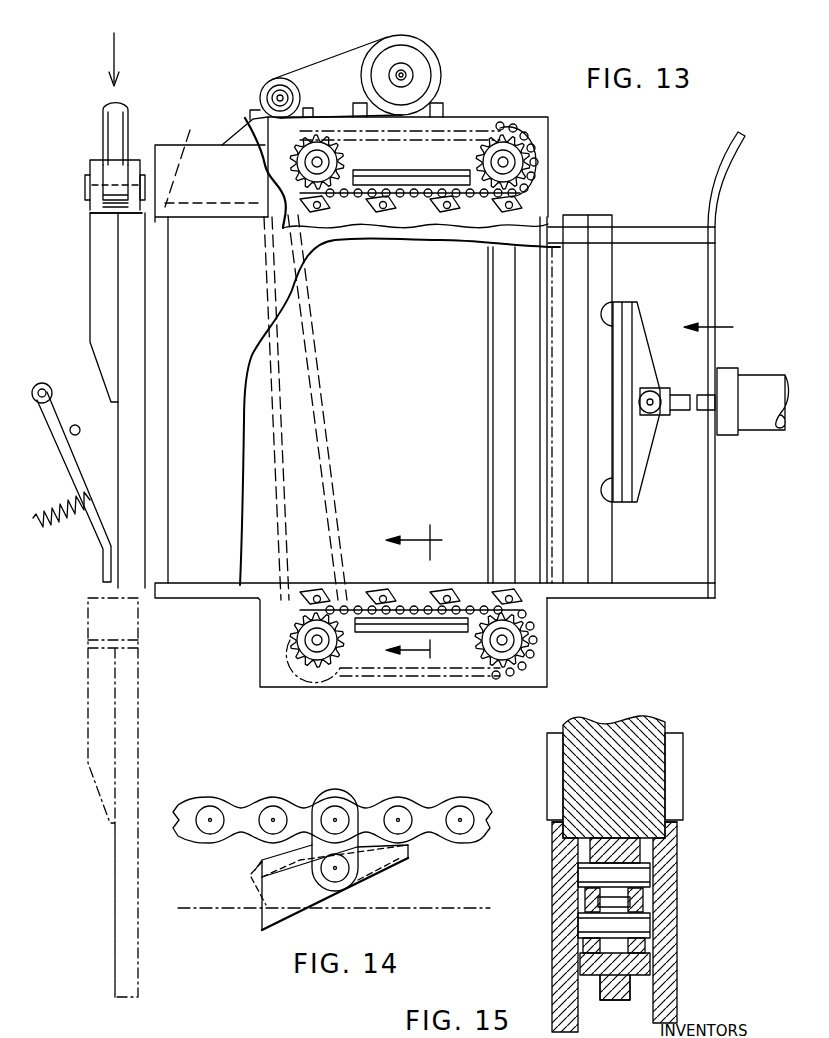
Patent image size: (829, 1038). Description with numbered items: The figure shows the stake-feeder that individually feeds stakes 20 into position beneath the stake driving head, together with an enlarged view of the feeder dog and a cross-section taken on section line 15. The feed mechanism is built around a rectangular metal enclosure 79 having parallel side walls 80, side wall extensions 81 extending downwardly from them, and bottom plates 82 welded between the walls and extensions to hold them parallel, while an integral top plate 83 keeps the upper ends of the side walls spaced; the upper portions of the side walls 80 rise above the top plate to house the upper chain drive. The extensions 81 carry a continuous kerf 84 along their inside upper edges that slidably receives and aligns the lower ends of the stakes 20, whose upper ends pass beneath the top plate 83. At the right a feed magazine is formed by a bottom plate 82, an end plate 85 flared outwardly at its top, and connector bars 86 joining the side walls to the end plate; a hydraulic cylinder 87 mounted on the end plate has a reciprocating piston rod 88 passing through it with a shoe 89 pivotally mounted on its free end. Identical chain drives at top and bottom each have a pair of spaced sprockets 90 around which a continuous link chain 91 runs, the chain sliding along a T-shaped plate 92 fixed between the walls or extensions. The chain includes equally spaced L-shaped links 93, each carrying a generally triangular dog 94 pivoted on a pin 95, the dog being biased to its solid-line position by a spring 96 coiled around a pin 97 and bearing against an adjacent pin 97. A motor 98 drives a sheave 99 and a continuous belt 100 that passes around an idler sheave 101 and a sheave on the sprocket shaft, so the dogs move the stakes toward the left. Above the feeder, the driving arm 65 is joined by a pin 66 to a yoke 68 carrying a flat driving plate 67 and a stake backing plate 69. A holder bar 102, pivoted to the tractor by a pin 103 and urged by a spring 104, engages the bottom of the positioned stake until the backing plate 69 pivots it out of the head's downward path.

In FIG. 13, the section line 15 is at (425, 593).
In FIG. 13, the stake 20 is at (592, 218).
In FIG. 15, the stake 20 is at (636, 722).
In FIG. 13, the driving arm 65 is at (118, 132).
In FIG. 13, the pin 66 is at (85, 185).
In FIG. 13, the driving plate 67 is at (95, 215).
In FIG. 13, the yoke 68 is at (93, 160).
In FIG. 13, the stake backing plate 69 is at (96, 290).
In FIG. 13, the rectangular metal enclosure 79 is at (208, 580).
In FIG. 13, the side walls 80 is at (236, 272).
In FIG. 15, the side walls 80 is at (547, 745).
In FIG. 15, the side wall extensions 81 is at (556, 950).
In FIG. 13, the bottom plates 82 is at (228, 592).
In FIG. 13, the top plate 83 is at (256, 356).
In FIG. 15, the kerf 84 is at (679, 826).
In FIG. 13, the end plate 85 is at (718, 186).
In FIG. 13, the connector bars 86 is at (655, 237).
In FIG. 13, the hydraulic cylinder 87 is at (746, 380).
In FIG. 13, the piston rod 88 is at (660, 390).
In FIG. 13, the shoe 89 is at (638, 335).
In FIG. 13, the sprockets 90 is at (292, 162).
In FIG. 13, the link chain 91 is at (545, 162).
In FIG. 15, the link chain 91 is at (652, 973).
In FIG. 13, the T-shaped plate 92 is at (416, 172).
In FIG. 14, the T-shaped plate 92 is at (243, 808).
In FIG. 15, the T-shaped plate 92 is at (619, 990).
In FIG. 14, the L-shaped link 93 is at (373, 806).
In FIG. 15, the L-shaped link 93 is at (645, 903).
In FIG. 14, the dog 94 is at (274, 912).
In FIG. 15, the dog 94 is at (588, 858).
In FIG. 14, the pin 95 is at (340, 885).
In FIG. 15, the pin 95 is at (640, 877).
In FIG. 14, the spring 96 is at (262, 868).
In FIG. 14, the pin 97 is at (335, 812).
In FIG. 15, the pin 97 is at (648, 926).
In FIG. 13, the motor 98 is at (434, 42).
In FIG. 13, the sheave 99 is at (401, 50).
In FIG. 13, the belt 100 is at (326, 70).
In FIG. 13, the idler sheave 101 is at (298, 101).
In FIG. 13, the holder bar 102 is at (70, 414).
In FIG. 13, the pin 103 is at (42, 383).
In FIG. 13, the spring 104 is at (37, 524).